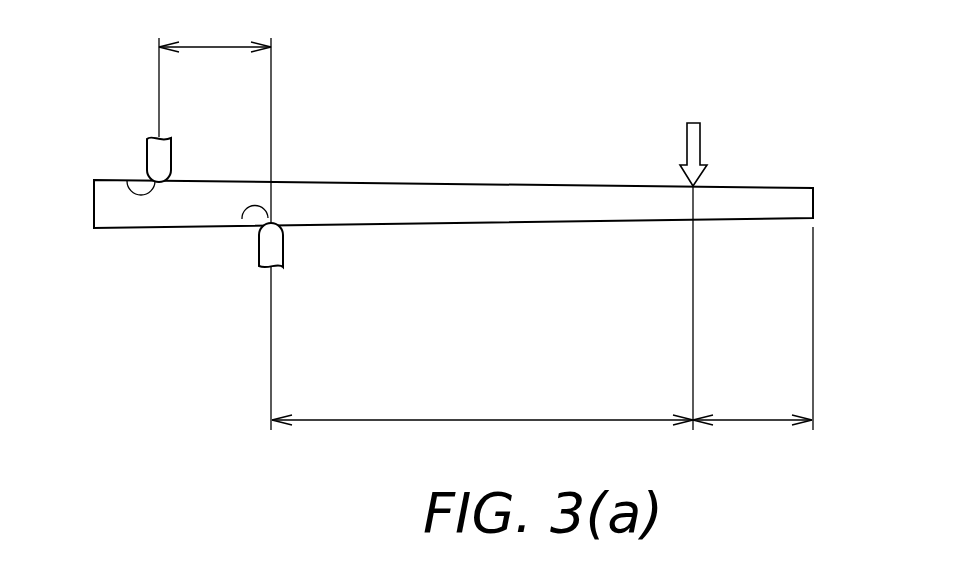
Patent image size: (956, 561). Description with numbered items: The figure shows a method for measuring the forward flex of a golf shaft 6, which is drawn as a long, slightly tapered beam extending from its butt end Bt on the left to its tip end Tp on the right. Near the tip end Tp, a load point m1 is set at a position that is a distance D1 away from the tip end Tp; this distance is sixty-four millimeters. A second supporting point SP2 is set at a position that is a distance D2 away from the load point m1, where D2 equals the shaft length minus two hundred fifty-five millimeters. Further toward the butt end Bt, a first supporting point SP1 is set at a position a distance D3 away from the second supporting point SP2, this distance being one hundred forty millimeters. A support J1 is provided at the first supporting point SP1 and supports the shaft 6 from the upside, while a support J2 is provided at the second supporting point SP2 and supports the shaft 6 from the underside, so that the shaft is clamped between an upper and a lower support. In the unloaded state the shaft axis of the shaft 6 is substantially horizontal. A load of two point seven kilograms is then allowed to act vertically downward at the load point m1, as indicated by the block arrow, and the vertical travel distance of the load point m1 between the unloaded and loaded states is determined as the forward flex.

The shaft 6 is at (419, 184).
The butt end Bt is at (94, 203).
The tip end Tp is at (813, 202).
The first supporting point SP1 is at (127, 181).
The second supporting point SP2 is at (242, 219).
The support J1 is at (171, 155).
The support J2 is at (283, 248).
The load point m1 is at (693, 186).
The distance from tip end to load point D1 is at (752, 435).
The distance from load point to second supporting point D2 is at (482, 435).
The distance between supporting points D3 is at (215, 33).